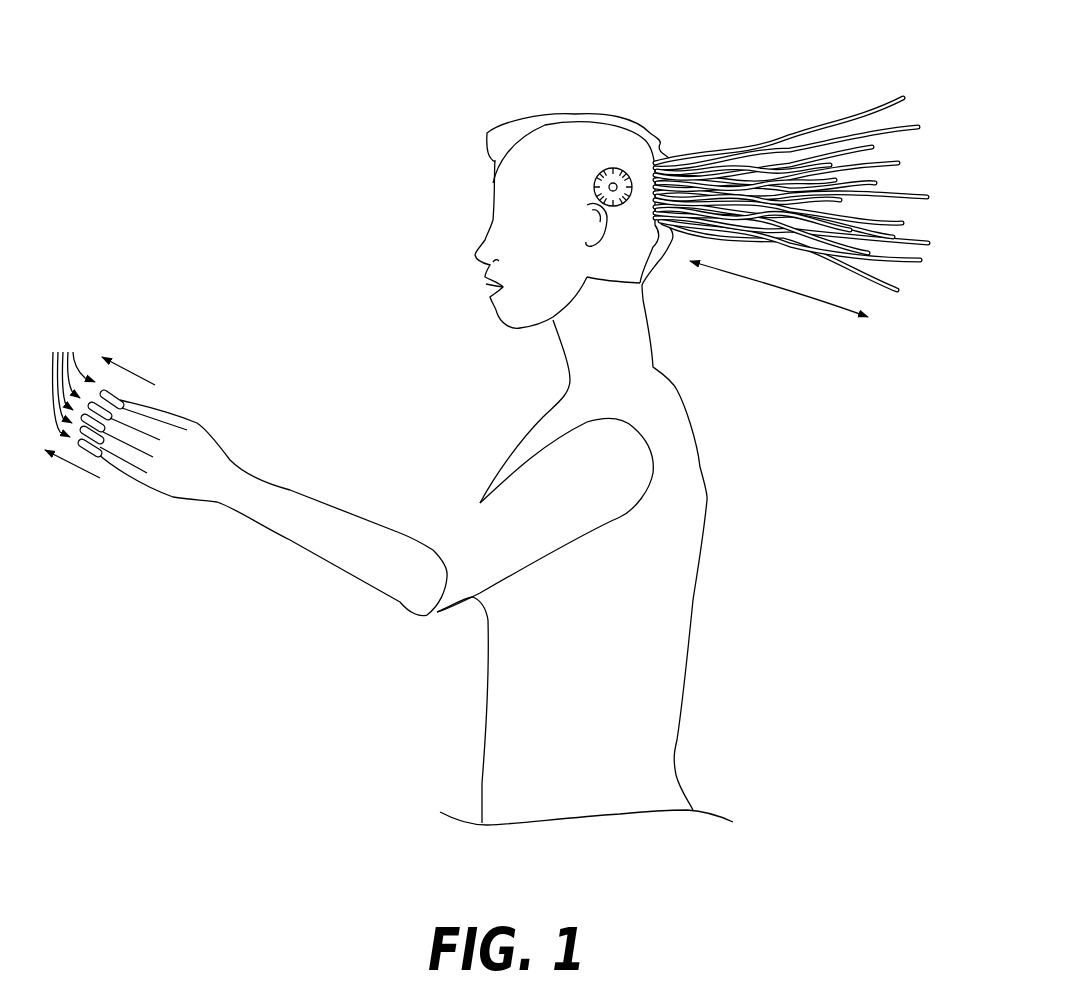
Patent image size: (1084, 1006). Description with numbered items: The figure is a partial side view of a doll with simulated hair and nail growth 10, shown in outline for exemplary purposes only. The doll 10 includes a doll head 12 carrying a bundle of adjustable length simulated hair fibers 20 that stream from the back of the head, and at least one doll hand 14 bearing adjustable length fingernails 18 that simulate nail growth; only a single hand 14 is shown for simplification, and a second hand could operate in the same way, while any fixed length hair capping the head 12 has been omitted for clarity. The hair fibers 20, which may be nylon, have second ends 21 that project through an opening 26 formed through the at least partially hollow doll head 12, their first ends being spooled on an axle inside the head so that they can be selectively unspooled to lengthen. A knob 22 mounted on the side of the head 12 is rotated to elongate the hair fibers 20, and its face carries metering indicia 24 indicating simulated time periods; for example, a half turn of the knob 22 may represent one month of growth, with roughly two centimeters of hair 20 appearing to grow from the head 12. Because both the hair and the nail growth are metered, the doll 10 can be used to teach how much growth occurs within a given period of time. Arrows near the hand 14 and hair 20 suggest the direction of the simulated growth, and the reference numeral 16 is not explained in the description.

The doll with simulated hair and nail growth 10 is at (392, 115).
The doll head 12 is at (493, 217).
The doll hand 14 is at (198, 423).
The movement arrows 16 is at (132, 490).
The adjustable length fingernails 18 is at (73, 378).
The simulated hair fibers 20 is at (743, 137).
The second ends 21 is at (928, 148).
The knob 22 is at (597, 177).
The metering indicia 24 is at (594, 193).
The opening 26 is at (655, 215).